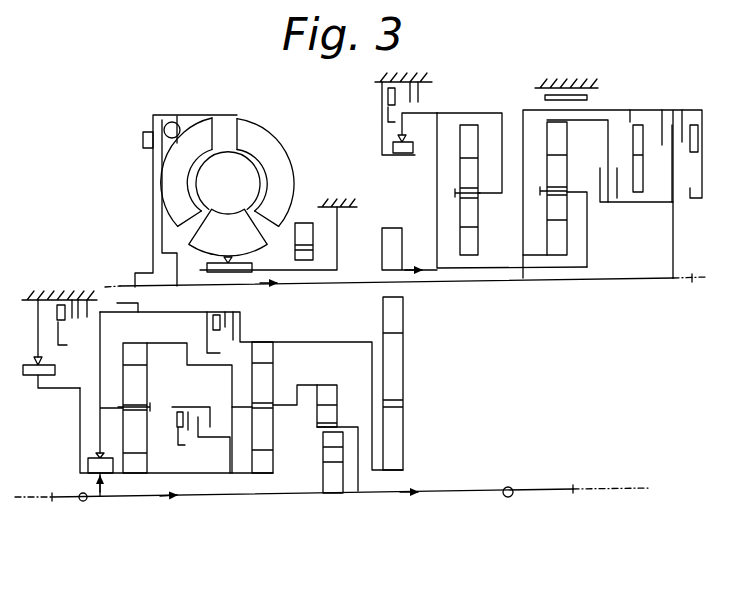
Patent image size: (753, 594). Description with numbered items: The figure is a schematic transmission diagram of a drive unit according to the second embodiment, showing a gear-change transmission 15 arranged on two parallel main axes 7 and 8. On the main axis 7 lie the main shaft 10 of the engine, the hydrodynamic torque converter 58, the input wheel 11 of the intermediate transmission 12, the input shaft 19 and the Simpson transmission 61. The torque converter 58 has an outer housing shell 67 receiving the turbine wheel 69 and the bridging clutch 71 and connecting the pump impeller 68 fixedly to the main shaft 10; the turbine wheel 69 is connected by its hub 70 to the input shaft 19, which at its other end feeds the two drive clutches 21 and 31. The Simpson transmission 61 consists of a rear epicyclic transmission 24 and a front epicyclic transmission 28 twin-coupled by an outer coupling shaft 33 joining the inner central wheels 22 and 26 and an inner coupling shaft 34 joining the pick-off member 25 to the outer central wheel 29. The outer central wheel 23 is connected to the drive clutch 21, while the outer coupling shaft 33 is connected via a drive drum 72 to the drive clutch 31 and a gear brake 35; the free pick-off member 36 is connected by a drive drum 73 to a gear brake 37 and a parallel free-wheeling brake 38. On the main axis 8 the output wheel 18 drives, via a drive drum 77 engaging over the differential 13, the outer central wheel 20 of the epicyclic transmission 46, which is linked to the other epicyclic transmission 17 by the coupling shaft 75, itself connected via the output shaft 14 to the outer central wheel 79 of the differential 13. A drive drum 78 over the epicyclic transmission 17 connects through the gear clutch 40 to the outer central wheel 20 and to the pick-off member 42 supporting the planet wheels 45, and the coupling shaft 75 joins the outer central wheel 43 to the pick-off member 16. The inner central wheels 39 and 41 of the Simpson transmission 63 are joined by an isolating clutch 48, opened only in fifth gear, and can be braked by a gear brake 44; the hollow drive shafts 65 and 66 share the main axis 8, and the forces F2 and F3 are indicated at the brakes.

The main axis 7 is at (117, 281).
The main axis 8 is at (27, 492).
The main shaft 10 is at (144, 269).
The input wheel 11 is at (387, 226).
The intermediate transmission 12 is at (411, 328).
The differential 13 is at (328, 498).
The output shaft 14 is at (287, 413).
The gear-change transmission 15 is at (489, 377).
The pick-off member 16 is at (238, 411).
The epicyclic transmission 17 is at (143, 484).
The output wheel 18 is at (411, 435).
The input shaft 19 is at (607, 283).
The outer central wheel 20 is at (265, 352).
The drive clutch 21 is at (612, 204).
The inner central wheel 22 is at (470, 240).
The outer central wheel 23 is at (558, 143).
The rear epicyclic transmission 24 is at (532, 139).
The pick-off member 25 is at (573, 197).
The inner central wheel 26 is at (557, 235).
The front epicyclic transmission 28 is at (484, 201).
The outer central wheel 29 is at (467, 133).
The drive clutch 31 is at (699, 164).
The outer coupling shaft 33 is at (535, 262).
The inner coupling shaft 34 is at (482, 271).
The gear brake 35 is at (574, 81).
The free pick-off member 36 is at (487, 189).
The gear brake 37 is at (418, 66).
The free-wheeling brake 38 is at (408, 164).
The inner central wheel 39 is at (267, 460).
The gear clutch 40 is at (244, 330).
The inner central wheel 41 is at (133, 465).
The pick-off member 42 is at (111, 416).
The outer central wheel 43 is at (132, 352).
The gear brake 44 is at (59, 296).
The planet wheels 45 is at (140, 390).
The epicyclic transmission 46 is at (268, 481).
The isolating clutch 48 is at (203, 448).
The hydrodynamic torque converter 58 is at (279, 119).
The Simpson transmission 61 is at (548, 49).
The Simpson transmission 63 is at (255, 524).
The hollow drive shaft 65 is at (545, 494).
The hollow drive shaft 66 is at (63, 501).
The outer housing shell 67 is at (212, 116).
The pump impeller 68 is at (282, 162).
The turbine wheel 69 is at (205, 138).
The hub 70 is at (197, 247).
The bridging clutch 71 is at (154, 158).
The drive drum 72 is at (627, 110).
The drive drum 73 is at (448, 113).
The coupling shaft 75 is at (193, 342).
The drive drum 77 is at (330, 342).
The drive drum 78 is at (153, 306).
The outer central wheel 79 is at (331, 396).
The force F2 is at (78, 516).
The force F3 is at (33, 378).